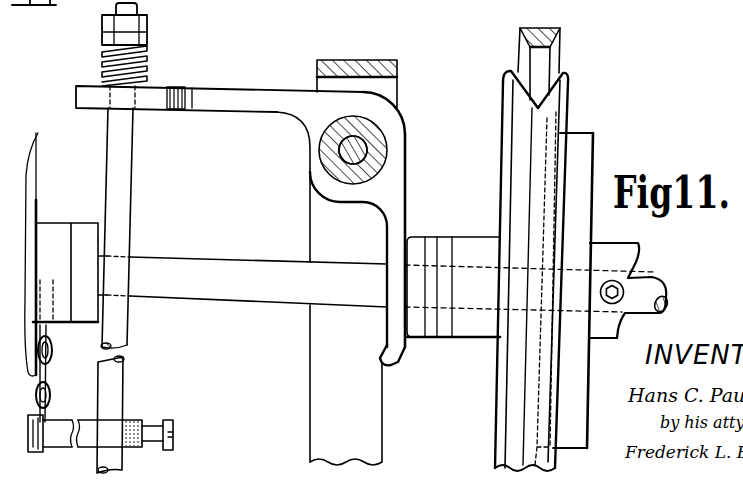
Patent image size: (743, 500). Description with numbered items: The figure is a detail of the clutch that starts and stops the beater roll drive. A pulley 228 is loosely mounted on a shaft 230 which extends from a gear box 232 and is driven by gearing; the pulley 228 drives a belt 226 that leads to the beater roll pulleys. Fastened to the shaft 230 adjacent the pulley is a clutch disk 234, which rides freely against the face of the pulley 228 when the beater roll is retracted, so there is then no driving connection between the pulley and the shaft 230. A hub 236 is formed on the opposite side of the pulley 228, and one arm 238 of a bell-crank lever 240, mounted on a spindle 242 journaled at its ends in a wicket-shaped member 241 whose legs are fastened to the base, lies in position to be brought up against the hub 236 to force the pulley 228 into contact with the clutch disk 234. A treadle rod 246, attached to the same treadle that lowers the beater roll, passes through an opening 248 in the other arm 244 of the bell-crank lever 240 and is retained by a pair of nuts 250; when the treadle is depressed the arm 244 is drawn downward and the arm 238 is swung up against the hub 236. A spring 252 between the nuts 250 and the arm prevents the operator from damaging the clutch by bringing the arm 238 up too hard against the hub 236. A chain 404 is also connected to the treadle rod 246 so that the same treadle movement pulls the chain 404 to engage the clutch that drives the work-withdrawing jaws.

The belt 226 is at (556, 48).
The pulley 228 is at (562, 108).
The shaft 230 is at (652, 281).
The gear box 232 is at (34, 205).
The clutch disk 234 is at (593, 160).
The hub 236 is at (472, 240).
The arm of bell-crank lever 238 is at (393, 348).
The bell-crank lever 240 is at (303, 157).
The wicket-shaped member 241 is at (318, 88).
The spindle 242 is at (347, 137).
The arm of bell-crank lever 244 is at (160, 92).
The treadle rod 246 is at (128, 170).
The opening 248 is at (104, 90).
The nuts 250 is at (147, 33).
The spring 252 is at (143, 58).
The chain 404 is at (47, 384).